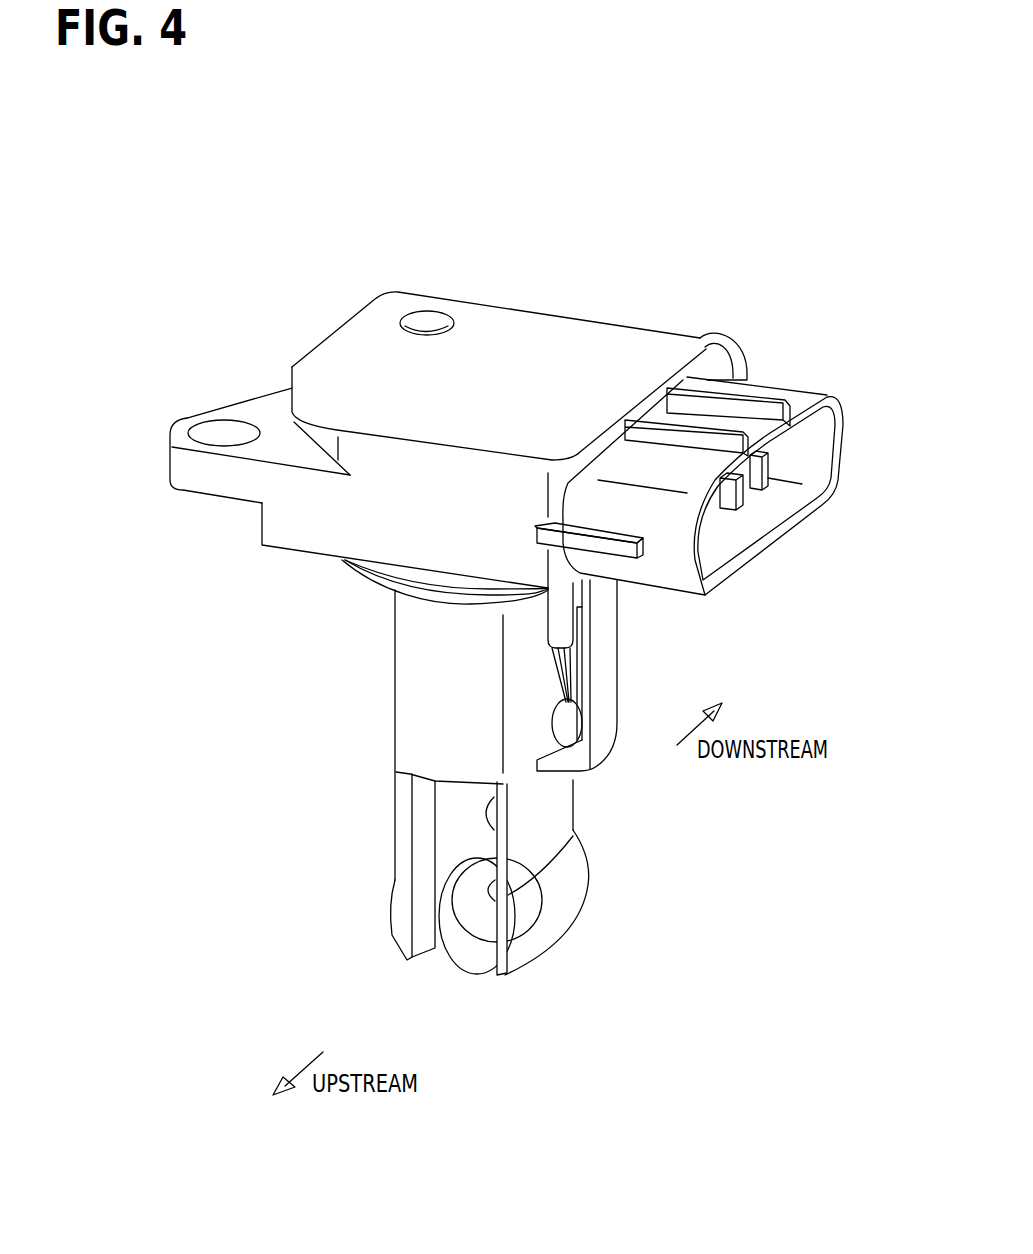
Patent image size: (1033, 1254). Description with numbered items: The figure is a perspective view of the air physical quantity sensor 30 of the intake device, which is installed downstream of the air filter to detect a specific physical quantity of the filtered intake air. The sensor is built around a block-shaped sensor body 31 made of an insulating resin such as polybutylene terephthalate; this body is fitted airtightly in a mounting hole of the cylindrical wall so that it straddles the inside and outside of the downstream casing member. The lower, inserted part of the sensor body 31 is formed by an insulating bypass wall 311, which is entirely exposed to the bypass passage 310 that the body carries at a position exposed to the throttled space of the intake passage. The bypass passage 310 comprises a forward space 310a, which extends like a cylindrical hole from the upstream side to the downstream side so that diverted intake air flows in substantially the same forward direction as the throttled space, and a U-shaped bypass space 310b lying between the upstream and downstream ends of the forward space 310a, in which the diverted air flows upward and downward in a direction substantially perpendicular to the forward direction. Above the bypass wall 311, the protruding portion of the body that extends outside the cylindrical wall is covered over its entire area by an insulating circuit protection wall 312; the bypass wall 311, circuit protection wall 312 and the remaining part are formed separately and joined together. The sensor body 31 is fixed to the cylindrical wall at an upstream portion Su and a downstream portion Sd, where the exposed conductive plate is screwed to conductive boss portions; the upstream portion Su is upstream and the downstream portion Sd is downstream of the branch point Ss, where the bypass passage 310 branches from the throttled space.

The air physical quantity sensor 30 is at (528, 305).
The sensor body 31 is at (400, 757).
The bypass wall 311 is at (393, 805).
The circuit protection wall 312 is at (318, 540).
The bypass passage 310 is at (584, 874).
The forward space 310a is at (495, 904).
The bypass space 310b is at (500, 832).
The upstream portion Su is at (181, 413).
The downstream portion Sd is at (744, 344).
The branch point Ss is at (459, 949).